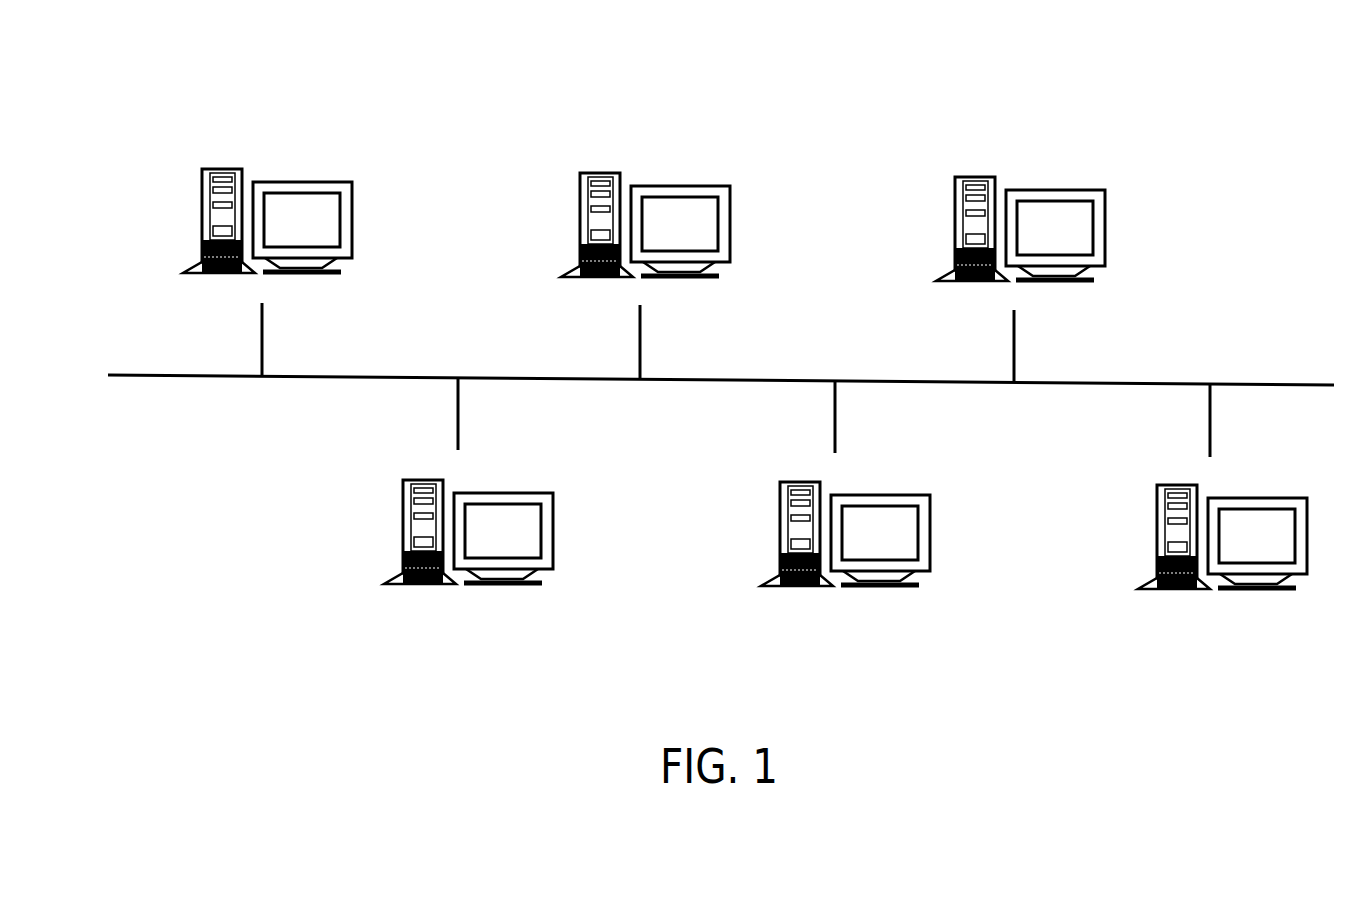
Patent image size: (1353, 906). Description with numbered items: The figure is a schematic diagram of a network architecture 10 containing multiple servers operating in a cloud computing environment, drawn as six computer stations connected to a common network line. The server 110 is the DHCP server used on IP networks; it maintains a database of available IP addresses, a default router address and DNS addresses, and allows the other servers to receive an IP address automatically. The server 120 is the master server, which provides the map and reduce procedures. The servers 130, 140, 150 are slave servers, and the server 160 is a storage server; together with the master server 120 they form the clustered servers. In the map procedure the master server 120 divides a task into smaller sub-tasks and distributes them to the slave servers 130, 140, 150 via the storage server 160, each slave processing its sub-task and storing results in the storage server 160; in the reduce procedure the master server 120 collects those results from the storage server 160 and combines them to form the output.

The network system 10 is at (1197, 88).
The DHCP server 110 is at (467, 607).
The master server 120 is at (843, 610).
The slave server 130 is at (1220, 613).
The slave server 140 is at (255, 153).
The slave server 150 is at (632, 157).
The storage server 160 is at (1008, 162).